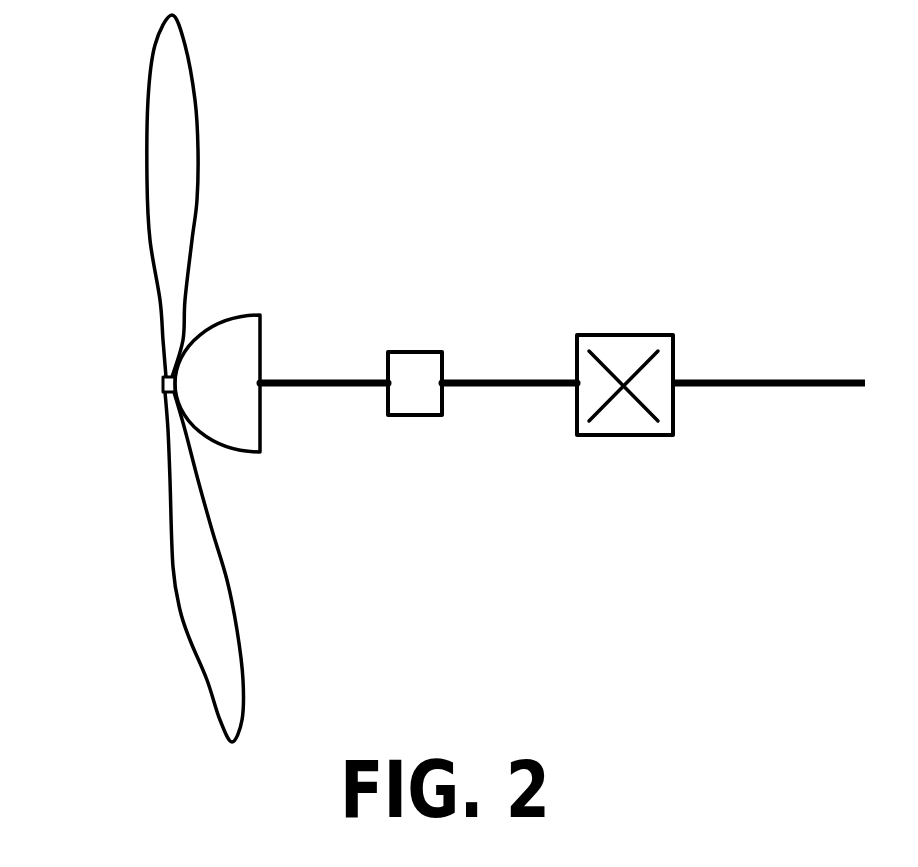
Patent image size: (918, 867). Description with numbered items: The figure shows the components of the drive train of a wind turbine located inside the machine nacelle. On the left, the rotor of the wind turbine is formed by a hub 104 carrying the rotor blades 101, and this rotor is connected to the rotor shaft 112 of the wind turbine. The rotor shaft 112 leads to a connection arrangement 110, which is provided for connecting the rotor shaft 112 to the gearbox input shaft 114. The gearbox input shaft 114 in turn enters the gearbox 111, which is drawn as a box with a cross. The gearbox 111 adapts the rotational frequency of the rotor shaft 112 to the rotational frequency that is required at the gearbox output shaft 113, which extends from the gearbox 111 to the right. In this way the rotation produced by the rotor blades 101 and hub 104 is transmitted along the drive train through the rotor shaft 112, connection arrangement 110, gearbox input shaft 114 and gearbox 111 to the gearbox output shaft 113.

The rotor blades 101 is at (175, 563).
The hub 104 is at (235, 357).
The rotor shaft 112 is at (310, 387).
The connection arrangement 110 is at (415, 415).
The gearbox input shaft 114 is at (513, 380).
The gearbox 111 is at (625, 435).
The gearbox output shaft 113 is at (758, 380).